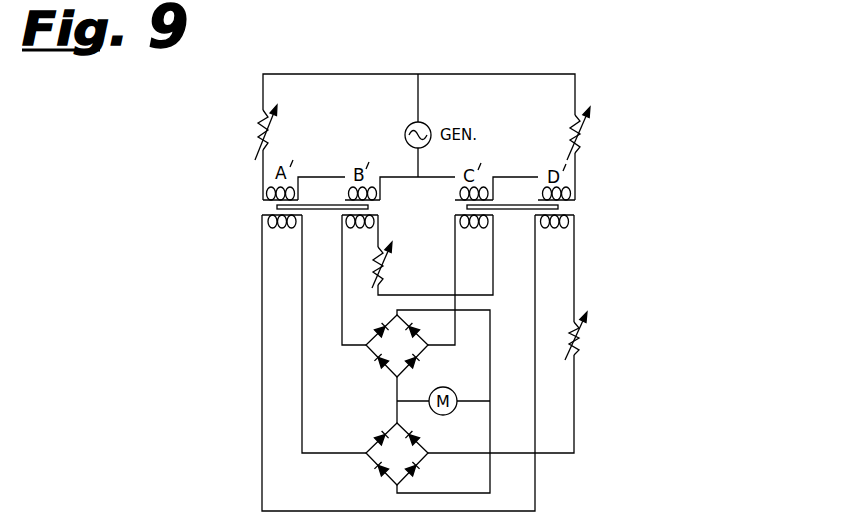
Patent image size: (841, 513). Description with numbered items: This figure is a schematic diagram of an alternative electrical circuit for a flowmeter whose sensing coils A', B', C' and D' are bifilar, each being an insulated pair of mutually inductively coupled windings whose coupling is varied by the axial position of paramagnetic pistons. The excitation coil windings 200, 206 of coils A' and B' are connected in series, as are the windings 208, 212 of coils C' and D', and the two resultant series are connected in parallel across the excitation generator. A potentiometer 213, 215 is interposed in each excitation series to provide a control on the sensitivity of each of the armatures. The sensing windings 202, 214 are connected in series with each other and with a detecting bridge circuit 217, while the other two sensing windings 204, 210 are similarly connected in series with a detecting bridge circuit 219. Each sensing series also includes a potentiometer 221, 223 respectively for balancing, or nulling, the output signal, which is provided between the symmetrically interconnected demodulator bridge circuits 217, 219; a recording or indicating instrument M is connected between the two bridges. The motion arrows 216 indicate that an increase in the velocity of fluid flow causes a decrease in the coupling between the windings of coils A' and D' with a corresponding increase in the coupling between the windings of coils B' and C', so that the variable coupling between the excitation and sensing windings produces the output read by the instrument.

The winding 200 is at (266, 201).
The winding 202 is at (263, 214).
The winding 204 is at (379, 217).
The winding 206 is at (383, 201).
The winding 208 is at (478, 196).
The winding 210 is at (471, 229).
The winding 212 is at (578, 205).
The winding 214 is at (578, 216).
The motion arrows 216 is at (467, 207).
The potentiometer 213 is at (268, 135).
The potentiometer 215 is at (578, 148).
The potentiometer 221 is at (383, 272).
The potentiometer 223 is at (575, 355).
The detecting bridge circuit 219 is at (430, 347).
The detecting bridge circuit 217 is at (430, 452).